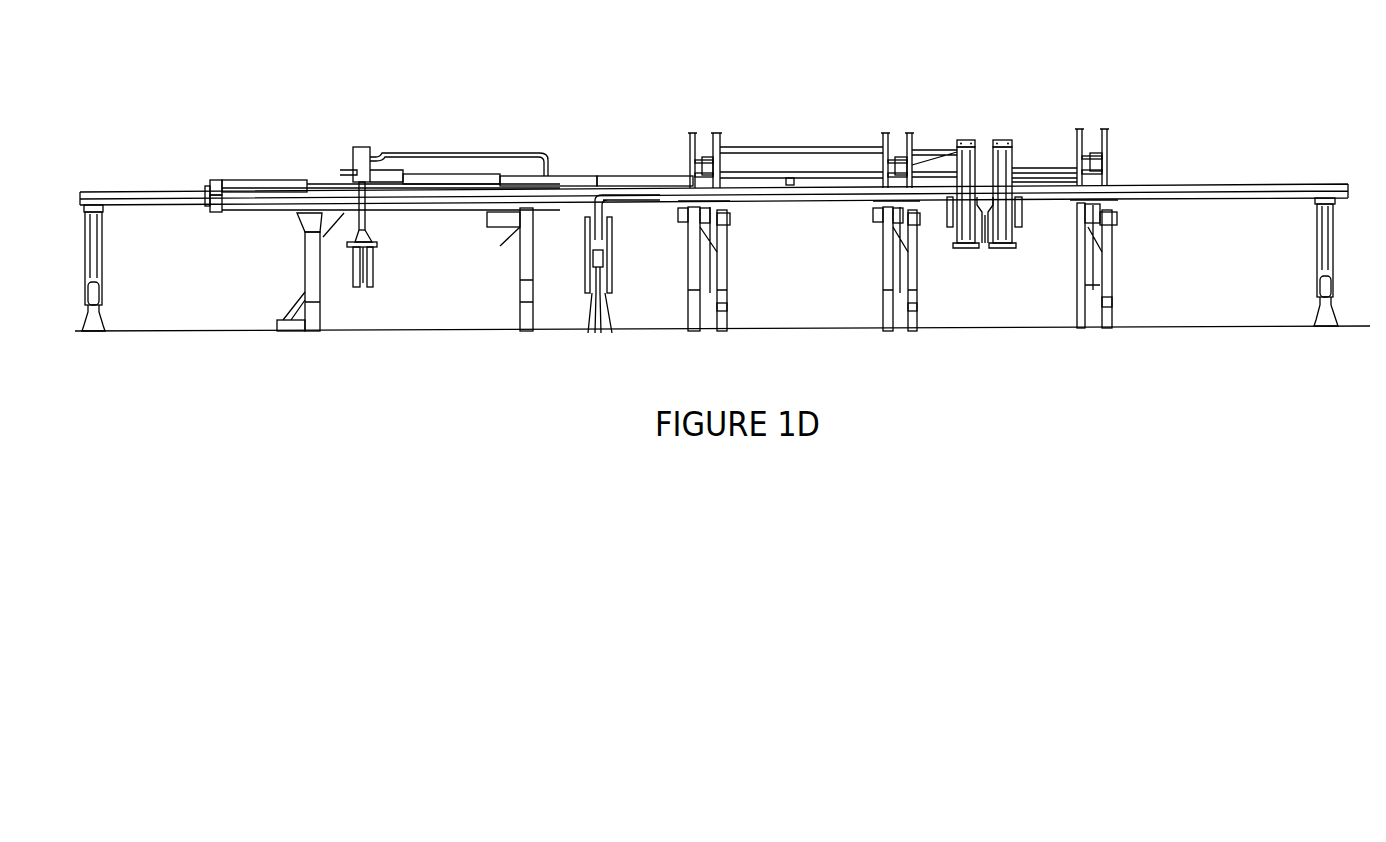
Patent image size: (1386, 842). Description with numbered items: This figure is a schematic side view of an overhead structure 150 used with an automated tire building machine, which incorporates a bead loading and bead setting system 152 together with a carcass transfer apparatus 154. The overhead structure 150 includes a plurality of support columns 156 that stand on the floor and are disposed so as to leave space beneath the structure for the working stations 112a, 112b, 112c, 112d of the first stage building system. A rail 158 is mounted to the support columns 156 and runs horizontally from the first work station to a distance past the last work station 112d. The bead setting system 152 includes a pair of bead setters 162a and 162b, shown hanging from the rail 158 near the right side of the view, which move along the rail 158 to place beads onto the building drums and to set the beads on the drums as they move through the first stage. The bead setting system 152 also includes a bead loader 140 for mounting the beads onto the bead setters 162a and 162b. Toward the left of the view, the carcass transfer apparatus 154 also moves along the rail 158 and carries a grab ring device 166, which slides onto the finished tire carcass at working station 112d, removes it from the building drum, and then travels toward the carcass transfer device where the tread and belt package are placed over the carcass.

The working station 112a is at (1178, 216).
The working station 112b is at (1027, 287).
The working station 112c is at (827, 285).
The working station 112d is at (597, 342).
The bead loader 140 is at (565, 240).
The overhead structure 150 is at (606, 156).
The bead loading and bead setting system 152 is at (1028, 215).
The carcass transfer apparatus 154 is at (393, 276).
The support columns 156 is at (102, 262).
The rail 158 is at (242, 205).
The bead setter 162a is at (995, 253).
The bead setter 162b is at (980, 252).
The grab ring device 166 is at (347, 263).